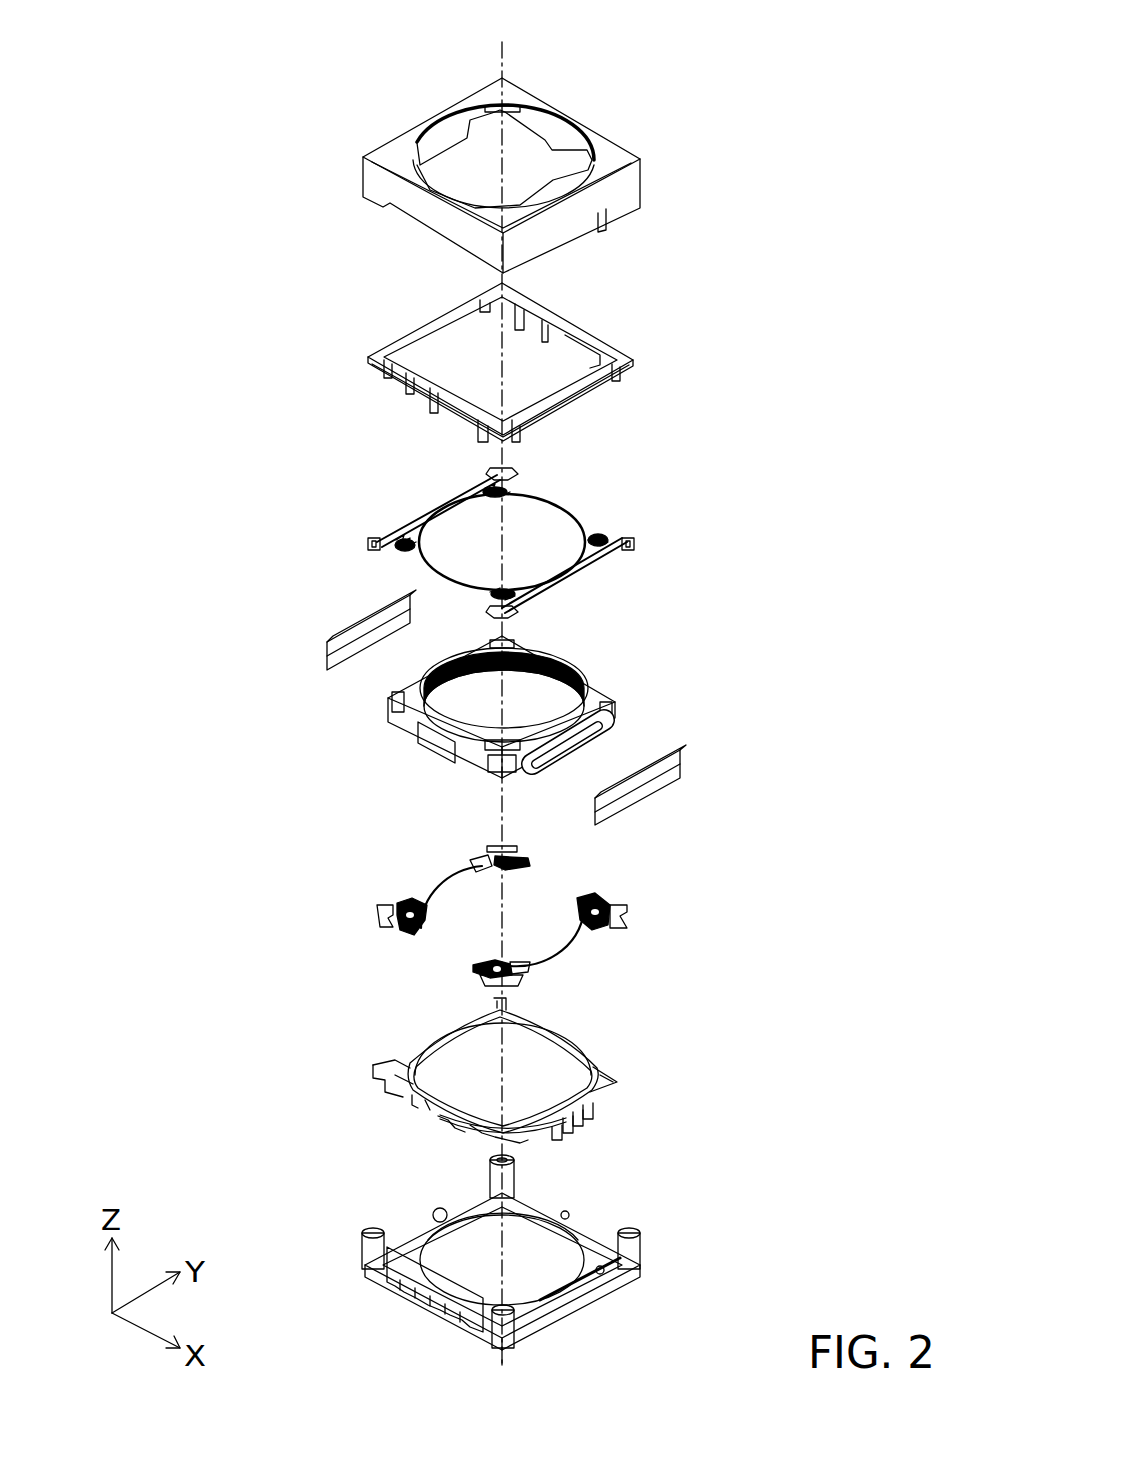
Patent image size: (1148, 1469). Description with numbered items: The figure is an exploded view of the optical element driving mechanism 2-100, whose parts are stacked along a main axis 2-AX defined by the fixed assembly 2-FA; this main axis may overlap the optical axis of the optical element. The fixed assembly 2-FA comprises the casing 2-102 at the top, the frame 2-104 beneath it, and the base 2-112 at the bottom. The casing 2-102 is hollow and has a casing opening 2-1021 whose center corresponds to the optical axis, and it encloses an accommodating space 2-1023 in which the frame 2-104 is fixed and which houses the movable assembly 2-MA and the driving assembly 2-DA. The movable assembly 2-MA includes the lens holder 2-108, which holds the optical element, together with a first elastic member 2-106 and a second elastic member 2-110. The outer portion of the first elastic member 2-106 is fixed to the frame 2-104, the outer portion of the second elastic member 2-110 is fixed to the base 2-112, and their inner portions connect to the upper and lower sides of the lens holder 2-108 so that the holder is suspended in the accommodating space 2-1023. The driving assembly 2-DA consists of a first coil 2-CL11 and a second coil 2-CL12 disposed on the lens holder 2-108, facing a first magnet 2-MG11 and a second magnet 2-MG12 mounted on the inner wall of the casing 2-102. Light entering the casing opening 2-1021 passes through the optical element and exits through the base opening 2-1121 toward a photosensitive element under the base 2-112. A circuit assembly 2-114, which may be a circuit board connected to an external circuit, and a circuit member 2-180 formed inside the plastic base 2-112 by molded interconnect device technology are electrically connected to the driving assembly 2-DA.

The optical element driving mechanism 2-100 is at (276, 30).
The main axis 2-AX is at (507, 685).
The fixed assembly 2-FA is at (176, 140).
The movable assembly 2-MA is at (176, 256).
The driving assembly 2-DA is at (178, 372).
The casing 2-102 is at (547, 163).
The casing opening 2-1021 is at (547, 115).
The accommodating space 2-1023 is at (436, 147).
The frame 2-104 is at (636, 360).
The first elastic member 2-106 is at (636, 542).
The lens holder 2-108 is at (506, 707).
The second elastic member 2-110 is at (617, 911).
The base 2-112 is at (529, 1252).
The base opening 2-1121 is at (552, 1240).
The circuit assembly 2-114 is at (398, 1273).
The circuit member 2-180 is at (632, 1075).
The first magnet 2-MG11 is at (326, 651).
The second magnet 2-MG12 is at (683, 768).
The first coil 2-CL11 is at (388, 690).
The second coil 2-CL12 is at (612, 717).